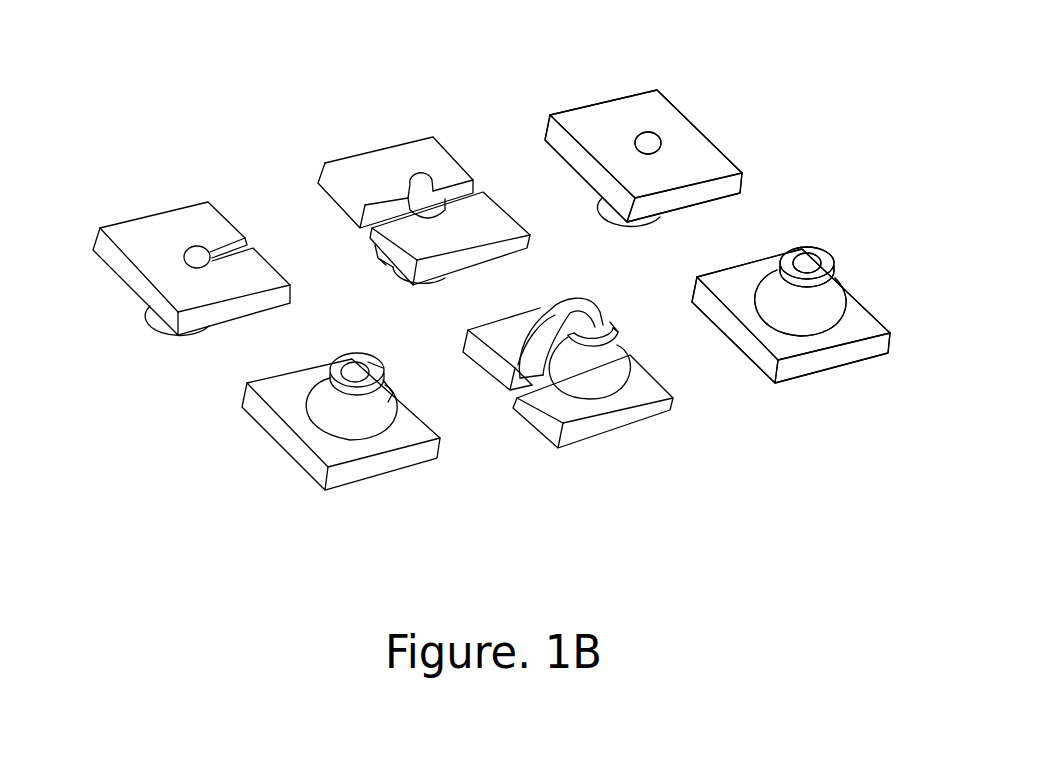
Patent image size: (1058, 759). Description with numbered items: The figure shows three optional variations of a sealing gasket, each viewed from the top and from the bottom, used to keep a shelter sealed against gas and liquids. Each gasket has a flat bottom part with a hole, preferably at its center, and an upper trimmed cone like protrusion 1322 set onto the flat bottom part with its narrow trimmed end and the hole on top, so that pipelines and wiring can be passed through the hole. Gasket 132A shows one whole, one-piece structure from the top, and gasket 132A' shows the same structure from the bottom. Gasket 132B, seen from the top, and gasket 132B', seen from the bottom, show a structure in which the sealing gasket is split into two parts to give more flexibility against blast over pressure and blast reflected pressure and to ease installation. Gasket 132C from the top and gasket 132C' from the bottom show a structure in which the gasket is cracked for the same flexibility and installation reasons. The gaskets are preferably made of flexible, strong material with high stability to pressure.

The sealing gasket 132A is at (810, 354).
The sealing gasket 132A' is at (704, 158).
The sealing gasket 132B is at (586, 415).
The sealing gasket 132B' is at (413, 171).
The sealing gasket 132C is at (358, 463).
The sealing gasket 132C' is at (183, 227).
The trimmed cone like protrusion 1322 is at (795, 247).